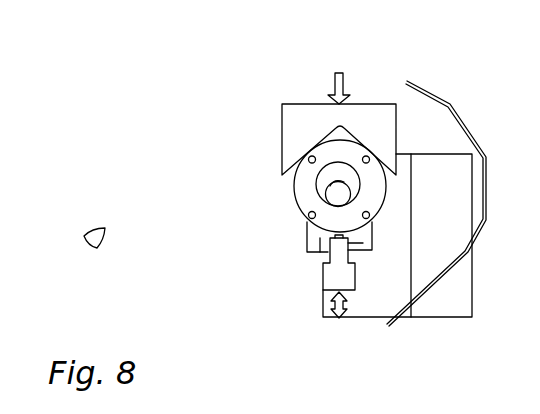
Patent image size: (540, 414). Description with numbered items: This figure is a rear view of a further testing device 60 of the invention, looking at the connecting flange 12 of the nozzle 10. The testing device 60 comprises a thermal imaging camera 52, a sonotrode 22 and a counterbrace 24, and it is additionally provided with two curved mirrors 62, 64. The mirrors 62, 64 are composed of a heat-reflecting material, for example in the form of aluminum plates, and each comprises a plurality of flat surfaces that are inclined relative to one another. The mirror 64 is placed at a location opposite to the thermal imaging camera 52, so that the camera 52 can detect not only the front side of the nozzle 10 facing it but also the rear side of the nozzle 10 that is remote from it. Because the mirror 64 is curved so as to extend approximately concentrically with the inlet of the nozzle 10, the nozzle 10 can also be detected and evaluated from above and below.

The testing device 60 is at (225, 117).
The counterbrace 24 is at (297, 123).
The connecting flange 12 is at (300, 188).
The nozzle 10 is at (305, 232).
The sonotrode 22 is at (330, 275).
The curved mirror 62 is at (453, 305).
The curved mirror 64 is at (442, 102).
The thermal imaging camera 52 is at (95, 237).